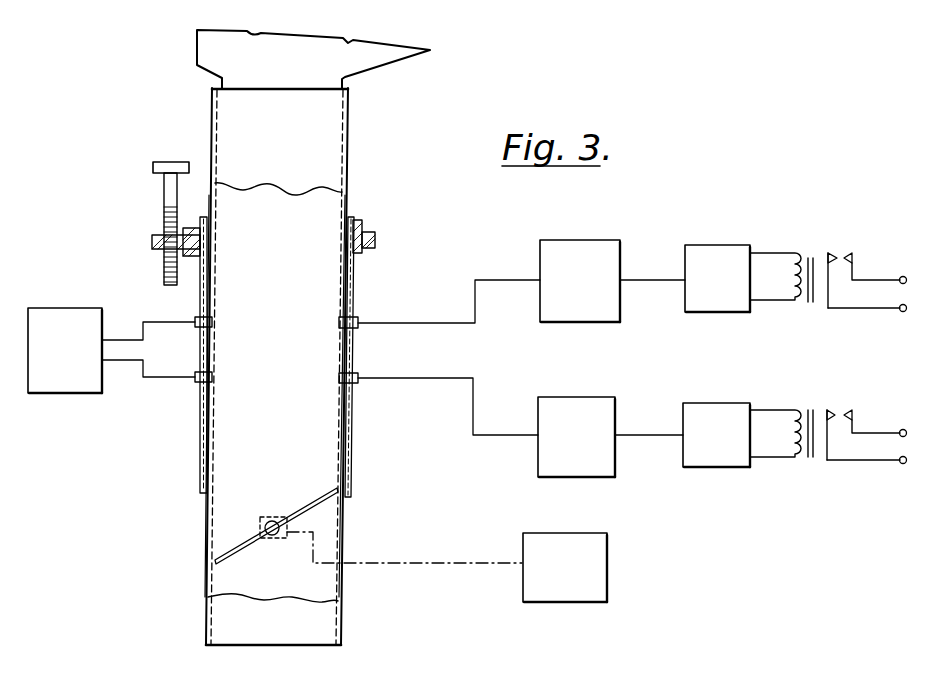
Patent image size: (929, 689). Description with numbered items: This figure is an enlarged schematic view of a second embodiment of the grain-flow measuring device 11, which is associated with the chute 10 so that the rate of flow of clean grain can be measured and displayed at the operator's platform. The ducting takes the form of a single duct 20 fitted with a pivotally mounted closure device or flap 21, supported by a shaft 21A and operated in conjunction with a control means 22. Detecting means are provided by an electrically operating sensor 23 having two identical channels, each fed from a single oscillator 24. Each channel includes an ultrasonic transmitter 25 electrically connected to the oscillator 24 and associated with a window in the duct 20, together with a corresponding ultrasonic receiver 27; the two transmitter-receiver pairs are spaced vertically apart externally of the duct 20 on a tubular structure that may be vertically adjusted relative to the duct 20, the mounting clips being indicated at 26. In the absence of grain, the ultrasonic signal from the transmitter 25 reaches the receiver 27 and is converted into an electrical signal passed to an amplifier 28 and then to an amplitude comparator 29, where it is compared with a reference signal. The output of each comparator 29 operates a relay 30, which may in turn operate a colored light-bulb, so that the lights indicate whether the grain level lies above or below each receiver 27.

The chute 10 is at (228, 62).
The grain-flow measuring device 11 is at (210, 146).
The duct 20 is at (348, 131).
The closure device or flap 21 is at (247, 543).
The shaft 21A is at (272, 520).
The control means 22 is at (580, 577).
The electrically operating sensor 23 is at (587, 231).
The oscillator 24 is at (80, 361).
The ultrasonic transmitter 25 is at (215, 323).
The clips 26 is at (213, 312).
The ultrasonic receiver 27 is at (342, 331).
The amplifier 28 is at (590, 298).
The amplitude comparator 29 is at (735, 298).
The relay 30 is at (812, 310).